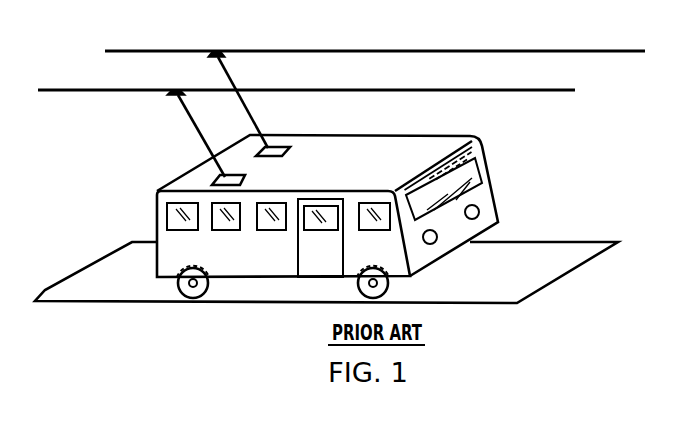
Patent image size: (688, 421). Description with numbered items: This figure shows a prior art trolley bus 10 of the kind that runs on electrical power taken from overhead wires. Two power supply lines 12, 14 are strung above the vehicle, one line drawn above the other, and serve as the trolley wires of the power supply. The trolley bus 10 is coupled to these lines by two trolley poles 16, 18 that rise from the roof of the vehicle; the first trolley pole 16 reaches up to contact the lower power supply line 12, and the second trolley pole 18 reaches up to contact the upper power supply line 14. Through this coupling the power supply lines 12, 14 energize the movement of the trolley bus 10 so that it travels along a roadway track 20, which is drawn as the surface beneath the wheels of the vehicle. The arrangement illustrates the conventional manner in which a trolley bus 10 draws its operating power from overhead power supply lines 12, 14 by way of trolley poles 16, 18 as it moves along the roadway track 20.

The trolley bus 10 is at (480, 152).
The power supply line 12 is at (68, 88).
The power supply line 14 is at (131, 50).
The trolley pole 16 is at (192, 127).
The trolley pole 18 is at (255, 117).
The roadway track 20 is at (522, 255).